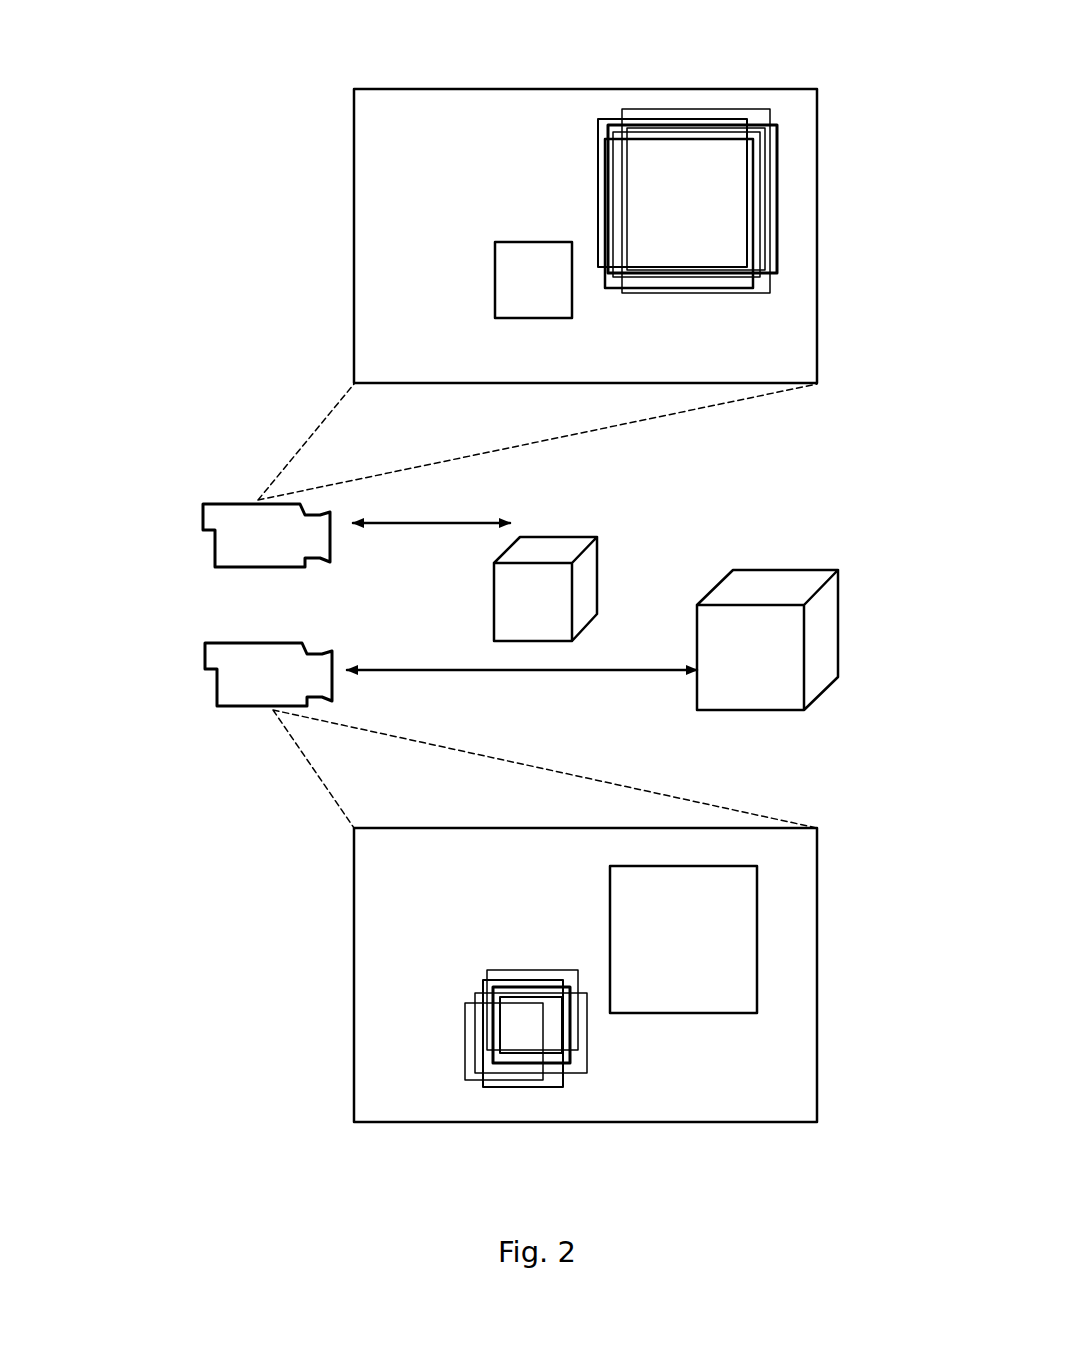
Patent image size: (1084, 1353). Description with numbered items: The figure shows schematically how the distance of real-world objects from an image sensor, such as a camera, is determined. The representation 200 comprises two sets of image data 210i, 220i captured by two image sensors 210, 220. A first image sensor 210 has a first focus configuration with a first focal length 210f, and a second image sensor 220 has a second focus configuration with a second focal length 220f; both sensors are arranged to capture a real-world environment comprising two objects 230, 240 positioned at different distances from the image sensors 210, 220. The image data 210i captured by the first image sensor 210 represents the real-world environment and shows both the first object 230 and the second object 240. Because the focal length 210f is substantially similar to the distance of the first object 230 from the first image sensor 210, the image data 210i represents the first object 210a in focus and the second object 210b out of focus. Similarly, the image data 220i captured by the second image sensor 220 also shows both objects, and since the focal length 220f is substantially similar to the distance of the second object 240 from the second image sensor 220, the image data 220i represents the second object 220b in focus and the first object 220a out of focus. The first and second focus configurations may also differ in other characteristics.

The representation 200 is at (340, 52).
The first image sensor 210 is at (203, 508).
The image data captured by the first image sensor 210i is at (351, 190).
The first object in first image data 210a is at (510, 242).
The second object in first image data 210b is at (782, 157).
The first focal length 210f is at (457, 523).
The second image sensor 220 is at (205, 648).
The image data captured by the second image sensor 220i is at (355, 905).
The first object in second image data 220a is at (503, 975).
The second object in second image data 220b is at (660, 1014).
The second focal length 220f is at (370, 670).
The first object 230 is at (575, 536).
The second object 240 is at (730, 572).